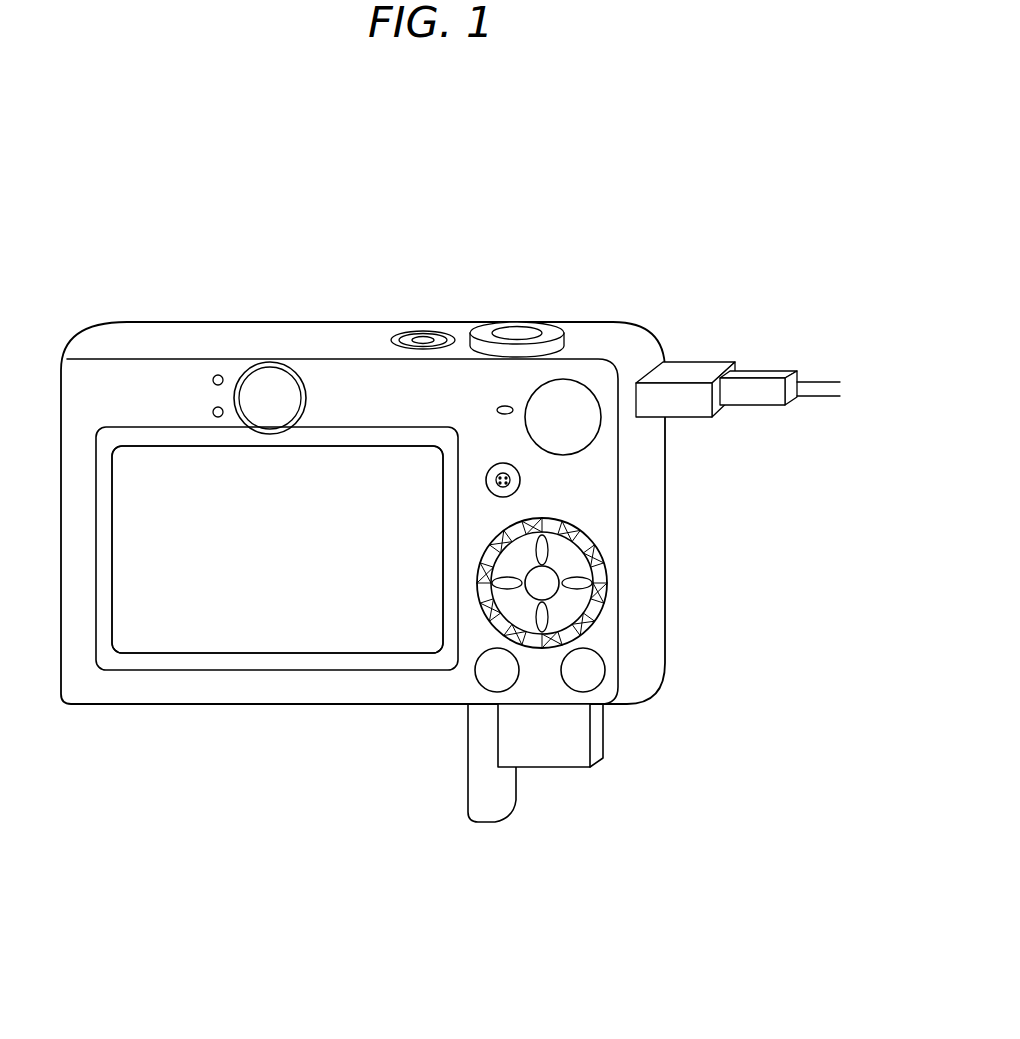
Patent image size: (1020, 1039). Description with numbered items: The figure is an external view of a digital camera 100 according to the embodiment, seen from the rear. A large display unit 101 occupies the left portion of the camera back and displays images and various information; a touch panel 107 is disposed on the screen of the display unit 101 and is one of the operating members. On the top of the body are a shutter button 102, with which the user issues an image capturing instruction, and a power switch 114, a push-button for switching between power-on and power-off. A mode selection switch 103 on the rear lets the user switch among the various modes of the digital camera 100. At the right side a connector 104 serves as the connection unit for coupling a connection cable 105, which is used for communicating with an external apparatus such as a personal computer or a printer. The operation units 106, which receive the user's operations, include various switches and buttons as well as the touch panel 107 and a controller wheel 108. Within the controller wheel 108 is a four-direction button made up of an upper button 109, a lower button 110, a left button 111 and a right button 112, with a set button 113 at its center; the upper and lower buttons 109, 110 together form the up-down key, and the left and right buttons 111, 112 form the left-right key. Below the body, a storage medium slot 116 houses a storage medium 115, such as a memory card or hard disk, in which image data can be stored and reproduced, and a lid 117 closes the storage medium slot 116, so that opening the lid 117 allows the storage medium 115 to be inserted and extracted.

The digital camera 100 is at (660, 236).
The display unit 101 is at (147, 482).
The touch panel 107 is at (277, 549).
The shutter button 102 is at (514, 332).
The mode selection switch 103 is at (580, 398).
The connector 104 is at (651, 363).
The connection cable 105 is at (757, 377).
The operation units 106 is at (550, 323).
The controller wheel 108 is at (470, 552).
The upper button 109 is at (537, 555).
The lower button 110 is at (537, 623).
The left button 111 is at (497, 588).
The right button 112 is at (533, 520).
The set button 113 is at (530, 593).
The power switch 114 is at (422, 338).
The storage medium 115 is at (562, 753).
The storage medium slot 116 is at (518, 707).
The lid 117 is at (482, 812).